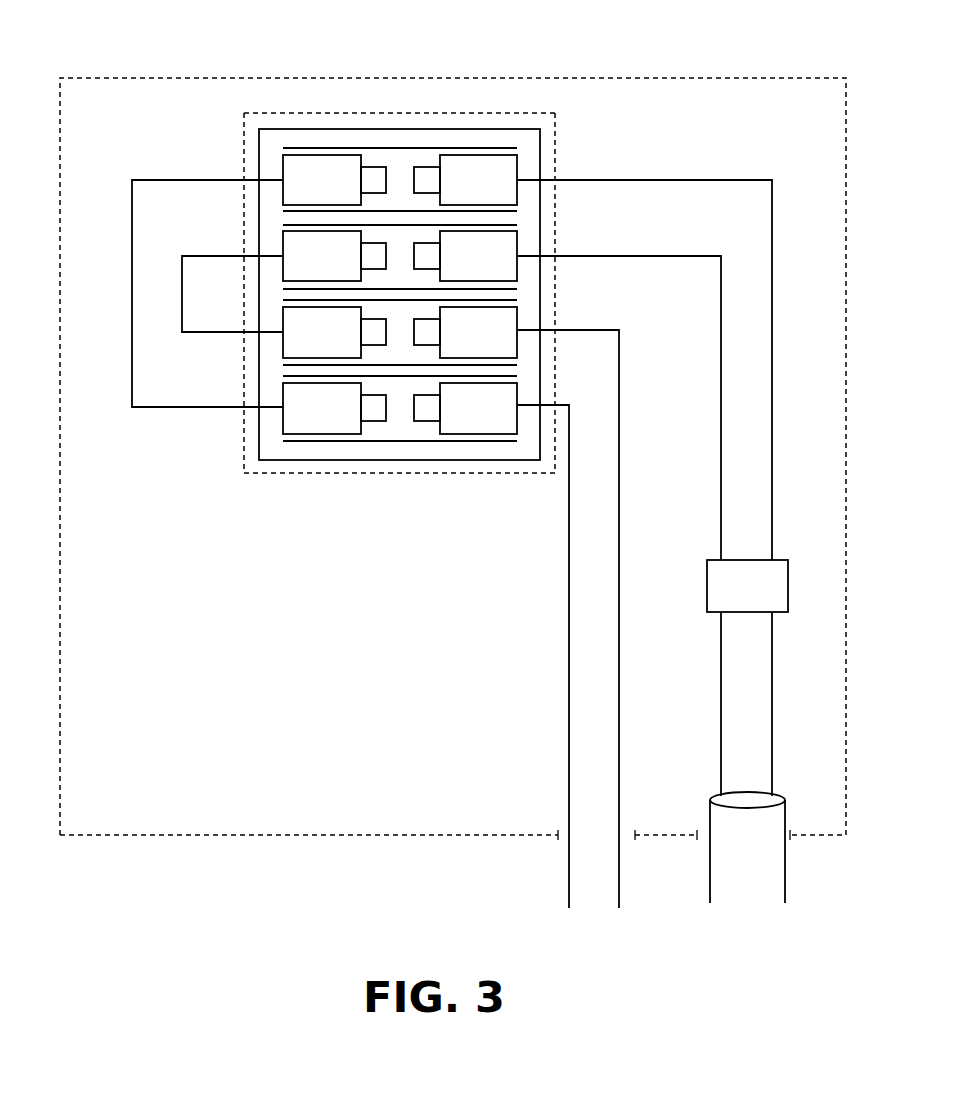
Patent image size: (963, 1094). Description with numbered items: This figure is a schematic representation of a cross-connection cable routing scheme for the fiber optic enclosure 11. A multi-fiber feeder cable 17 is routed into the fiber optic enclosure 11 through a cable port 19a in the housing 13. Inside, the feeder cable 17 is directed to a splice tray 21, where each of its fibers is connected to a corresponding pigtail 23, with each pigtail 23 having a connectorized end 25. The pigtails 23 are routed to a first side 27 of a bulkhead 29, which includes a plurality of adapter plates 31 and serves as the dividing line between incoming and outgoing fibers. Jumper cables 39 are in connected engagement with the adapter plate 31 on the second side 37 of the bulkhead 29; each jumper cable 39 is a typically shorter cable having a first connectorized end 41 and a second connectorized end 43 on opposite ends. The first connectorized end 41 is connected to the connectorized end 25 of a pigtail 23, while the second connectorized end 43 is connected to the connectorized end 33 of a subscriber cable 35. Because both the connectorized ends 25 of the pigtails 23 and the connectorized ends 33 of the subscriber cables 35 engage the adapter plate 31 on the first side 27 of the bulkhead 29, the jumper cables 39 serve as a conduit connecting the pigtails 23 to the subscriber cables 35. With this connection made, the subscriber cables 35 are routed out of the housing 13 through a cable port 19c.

The fiber optic enclosure 11 is at (183, 62).
The housing 13 is at (849, 205).
The multi-fiber feeder cable 17 is at (747, 847).
The cable port 19a is at (782, 840).
The cable port 19c is at (567, 838).
The splice tray 21 is at (747, 586).
The pigtail 23 is at (772, 348).
The connectorized end 25 is at (508, 170).
The first side 27 is at (556, 468).
The bulkhead 29 is at (420, 110).
The adapter plate 31 is at (384, 465).
The connectorized end 33 is at (500, 330).
The subscriber cable 35 is at (569, 673).
The second side 37 is at (245, 462).
The jumper cable 39 is at (182, 305).
The first connectorized end 41 is at (300, 170).
The second connectorized end 43 is at (297, 340).